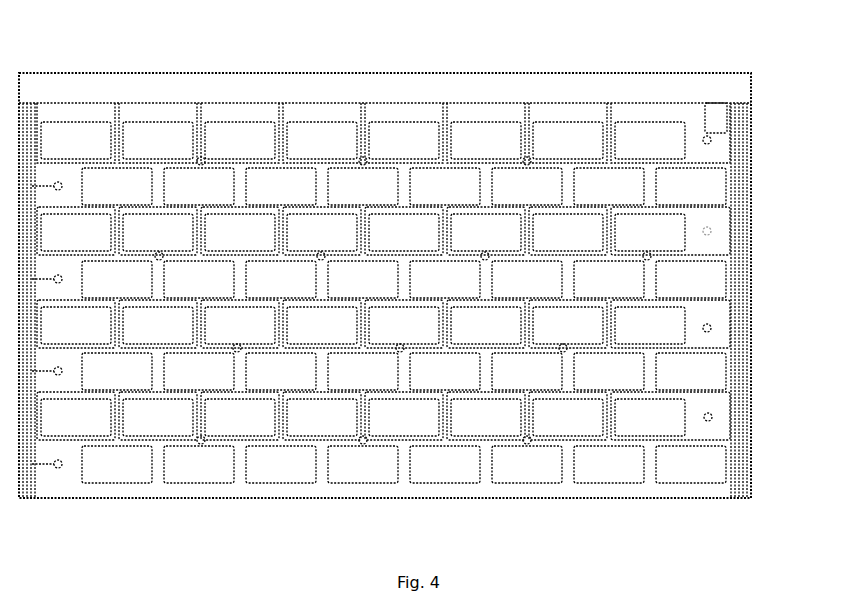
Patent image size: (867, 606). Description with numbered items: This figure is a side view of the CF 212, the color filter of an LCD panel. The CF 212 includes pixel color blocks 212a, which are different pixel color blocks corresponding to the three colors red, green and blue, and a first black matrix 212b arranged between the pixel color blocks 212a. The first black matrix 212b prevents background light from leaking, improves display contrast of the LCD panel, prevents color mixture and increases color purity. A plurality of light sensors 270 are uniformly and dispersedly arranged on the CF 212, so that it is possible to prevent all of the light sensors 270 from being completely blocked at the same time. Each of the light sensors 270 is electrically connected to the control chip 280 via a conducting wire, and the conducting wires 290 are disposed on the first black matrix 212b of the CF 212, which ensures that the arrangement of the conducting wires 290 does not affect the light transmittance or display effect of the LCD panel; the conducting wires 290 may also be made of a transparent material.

The CF 212 is at (755, 212).
The pixel color blocks 212a is at (405, 140).
The first black matrix 212b is at (693, 113).
The light sensors 270 is at (713, 139).
The control chip 280 is at (736, 90).
The conducting wires 290 is at (708, 122).